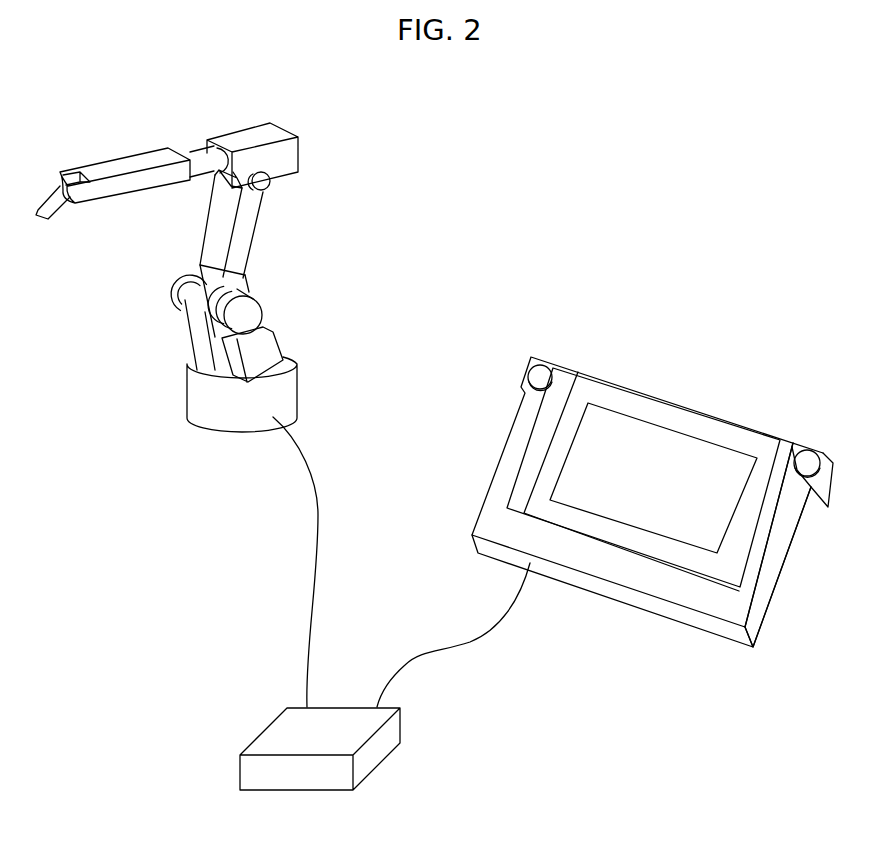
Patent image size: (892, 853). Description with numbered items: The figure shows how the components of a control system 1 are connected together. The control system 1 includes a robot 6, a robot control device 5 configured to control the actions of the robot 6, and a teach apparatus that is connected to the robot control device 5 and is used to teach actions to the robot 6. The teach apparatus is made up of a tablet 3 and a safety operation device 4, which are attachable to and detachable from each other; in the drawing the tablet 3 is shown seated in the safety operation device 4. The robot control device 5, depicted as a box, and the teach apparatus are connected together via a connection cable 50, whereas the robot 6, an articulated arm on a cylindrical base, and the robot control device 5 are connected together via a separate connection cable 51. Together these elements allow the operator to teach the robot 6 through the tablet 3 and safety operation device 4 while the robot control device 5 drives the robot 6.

The control system 1 is at (797, 389).
The tablet 3 is at (677, 405).
The safety operation device 4 is at (792, 553).
The robot control device 5 is at (340, 707).
The robot 6 is at (233, 132).
The connection cable 50 is at (447, 640).
The connection cable 51 is at (322, 515).